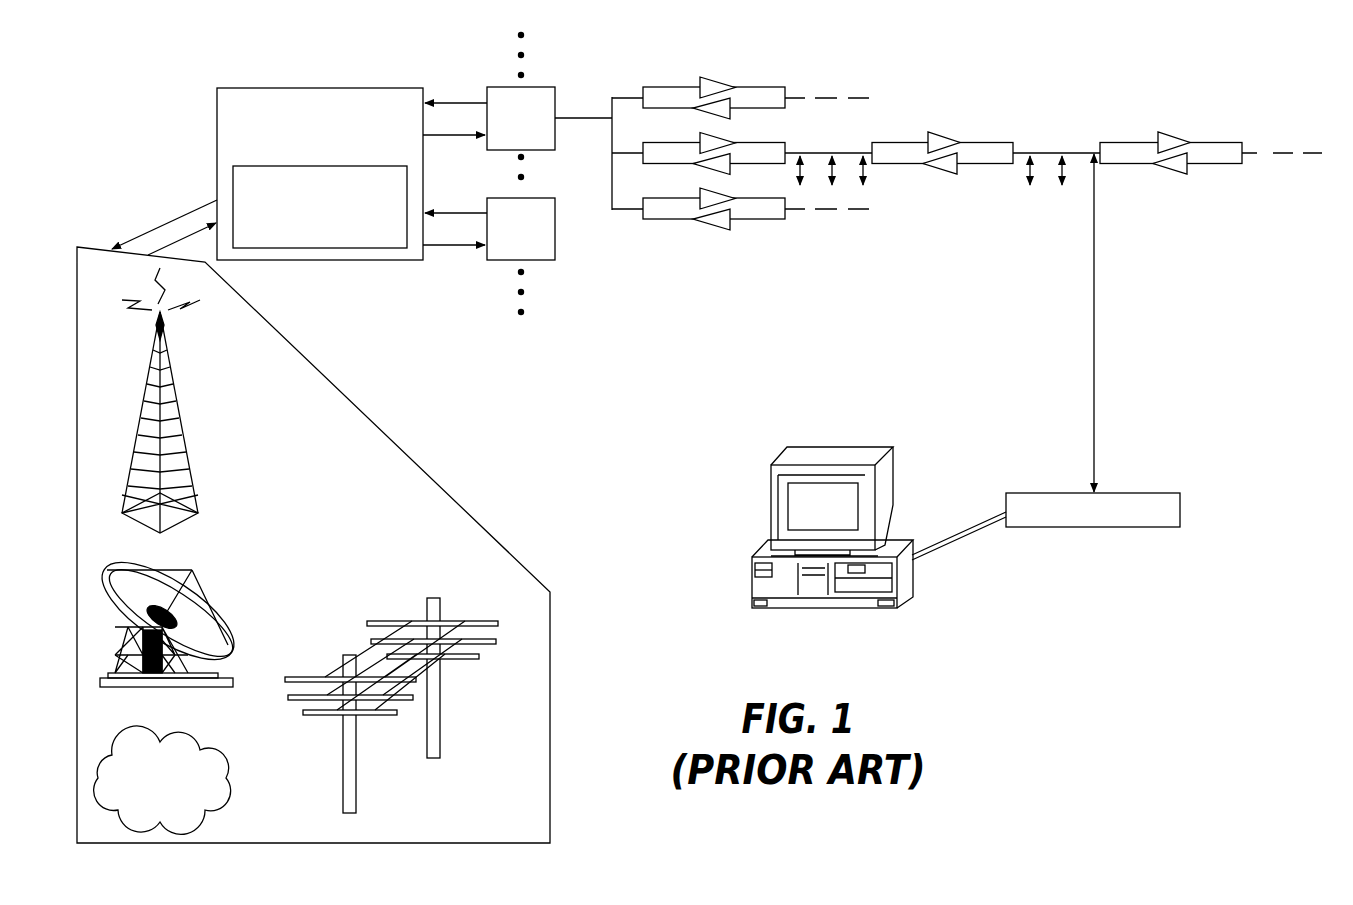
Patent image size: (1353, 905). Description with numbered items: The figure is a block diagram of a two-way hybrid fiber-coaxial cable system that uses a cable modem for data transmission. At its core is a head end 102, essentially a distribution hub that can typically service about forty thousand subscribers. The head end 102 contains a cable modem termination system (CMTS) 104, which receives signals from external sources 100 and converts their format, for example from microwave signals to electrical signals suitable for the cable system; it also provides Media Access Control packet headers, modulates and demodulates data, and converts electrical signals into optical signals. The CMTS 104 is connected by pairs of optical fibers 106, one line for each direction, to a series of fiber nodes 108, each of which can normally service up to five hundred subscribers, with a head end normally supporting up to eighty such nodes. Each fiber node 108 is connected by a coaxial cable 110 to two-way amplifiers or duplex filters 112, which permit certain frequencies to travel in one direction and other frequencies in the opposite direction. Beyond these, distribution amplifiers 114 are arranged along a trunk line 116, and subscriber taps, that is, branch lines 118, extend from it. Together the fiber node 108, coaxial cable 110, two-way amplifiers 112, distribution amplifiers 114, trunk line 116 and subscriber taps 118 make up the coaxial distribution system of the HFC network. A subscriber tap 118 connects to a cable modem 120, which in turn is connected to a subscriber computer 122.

The external sources 100 is at (93, 244).
The head end 102 is at (412, 86).
The cable modem termination system (CMTS) 104 is at (322, 249).
The optical fibers 106 is at (443, 215).
The fiber node 108 is at (555, 261).
The coaxial cable 110 is at (583, 118).
The two-way amplifiers 112 is at (670, 221).
The distribution amplifiers 114 is at (942, 172).
The trunk line 116 is at (1052, 152).
The subscriber tap 118 is at (1094, 318).
The cable modem 120 is at (1151, 493).
The subscriber computer 122 is at (771, 477).